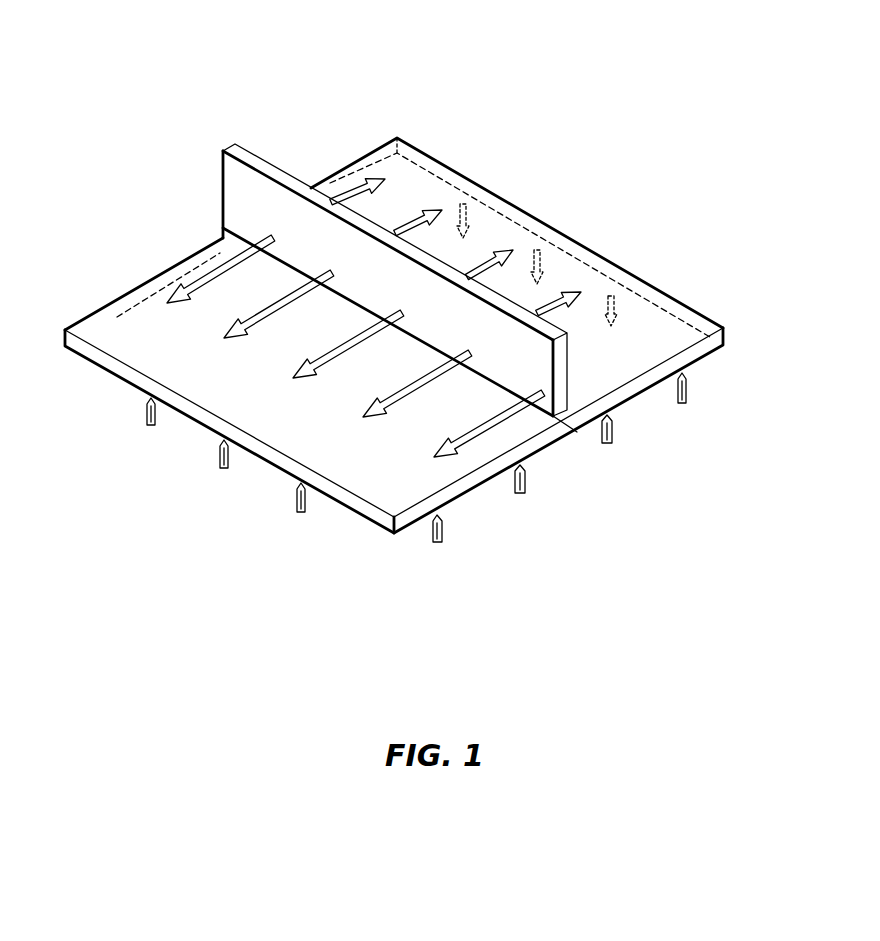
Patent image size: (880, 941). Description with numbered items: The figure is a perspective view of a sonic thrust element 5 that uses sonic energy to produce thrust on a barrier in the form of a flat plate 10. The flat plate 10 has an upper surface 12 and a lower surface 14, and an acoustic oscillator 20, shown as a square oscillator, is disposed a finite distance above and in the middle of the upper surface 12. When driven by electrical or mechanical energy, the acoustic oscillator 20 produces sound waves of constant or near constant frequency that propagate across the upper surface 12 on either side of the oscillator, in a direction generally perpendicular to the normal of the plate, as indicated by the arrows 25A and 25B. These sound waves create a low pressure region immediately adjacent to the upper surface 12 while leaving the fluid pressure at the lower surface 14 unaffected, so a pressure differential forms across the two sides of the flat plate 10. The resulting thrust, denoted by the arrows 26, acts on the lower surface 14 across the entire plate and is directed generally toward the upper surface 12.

The sonic thrust element 5 is at (461, 92).
The flat plate 10 is at (388, 527).
The upper surface 12 is at (243, 414).
The lower surface 14 is at (488, 486).
The acoustic oscillator 20 is at (248, 149).
The arrow indicating direction of sound propagation 25A is at (201, 276).
The arrow indicating direction of sound propagation 25B is at (377, 176).
The thrust arrows 26 is at (657, 292).